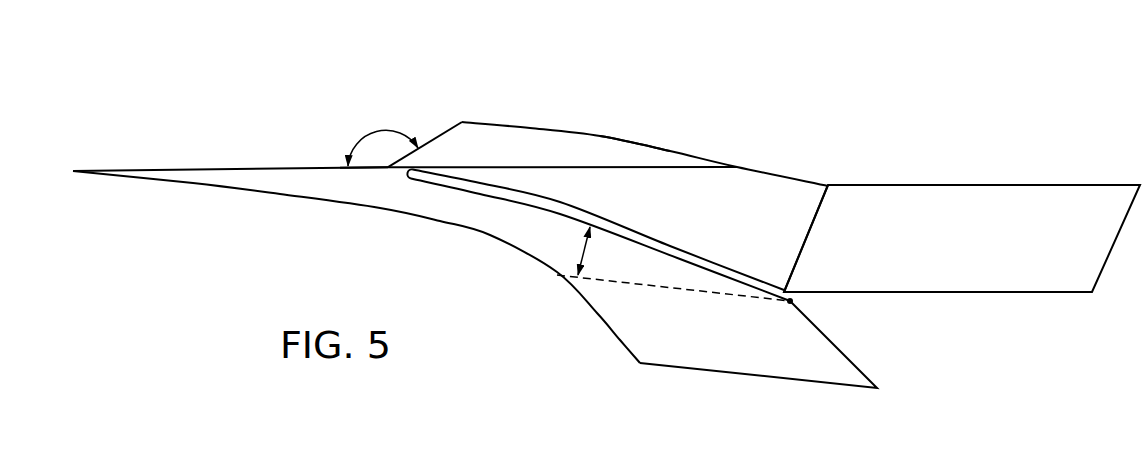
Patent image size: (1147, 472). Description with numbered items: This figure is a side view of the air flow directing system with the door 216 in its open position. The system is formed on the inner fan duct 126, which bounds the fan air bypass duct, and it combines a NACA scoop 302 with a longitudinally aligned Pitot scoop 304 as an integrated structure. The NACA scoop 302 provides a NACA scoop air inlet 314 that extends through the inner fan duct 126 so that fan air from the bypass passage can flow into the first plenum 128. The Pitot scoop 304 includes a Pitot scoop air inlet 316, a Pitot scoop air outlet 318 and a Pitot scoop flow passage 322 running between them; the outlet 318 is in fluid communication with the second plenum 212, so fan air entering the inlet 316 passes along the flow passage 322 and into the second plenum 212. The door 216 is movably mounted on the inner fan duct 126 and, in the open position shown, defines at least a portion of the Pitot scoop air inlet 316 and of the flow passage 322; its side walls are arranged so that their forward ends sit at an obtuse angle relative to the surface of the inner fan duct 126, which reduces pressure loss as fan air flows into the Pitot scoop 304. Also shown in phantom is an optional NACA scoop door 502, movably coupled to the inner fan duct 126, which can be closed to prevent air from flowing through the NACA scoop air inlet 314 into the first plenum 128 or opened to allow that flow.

The inner fan duct 126 is at (100, 170).
The first plenum 128 is at (752, 377).
The second plenum 212 is at (1000, 251).
The door 216 is at (627, 128).
The NACA scoop 302 is at (187, 148).
The Pitot scoop 304 is at (430, 120).
The NACA scoop air inlet 314 is at (395, 196).
The Pitot scoop air inlet 316 is at (459, 121).
The Pitot scoop air outlet 318 is at (808, 232).
The Pitot scoop flow passage 322 is at (695, 214).
The NACA scoop door 502 is at (657, 289).